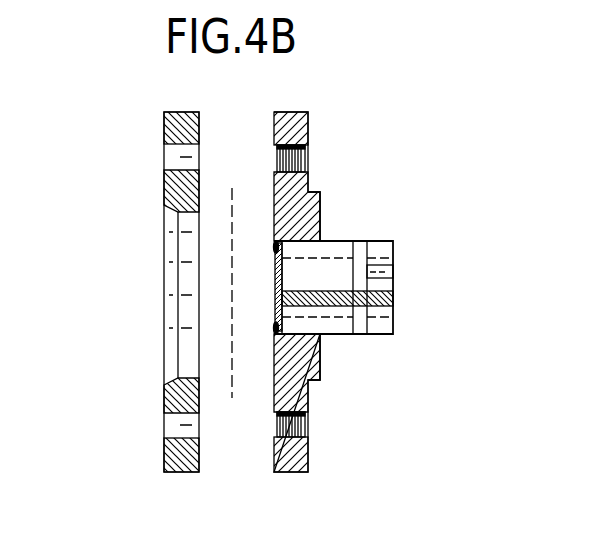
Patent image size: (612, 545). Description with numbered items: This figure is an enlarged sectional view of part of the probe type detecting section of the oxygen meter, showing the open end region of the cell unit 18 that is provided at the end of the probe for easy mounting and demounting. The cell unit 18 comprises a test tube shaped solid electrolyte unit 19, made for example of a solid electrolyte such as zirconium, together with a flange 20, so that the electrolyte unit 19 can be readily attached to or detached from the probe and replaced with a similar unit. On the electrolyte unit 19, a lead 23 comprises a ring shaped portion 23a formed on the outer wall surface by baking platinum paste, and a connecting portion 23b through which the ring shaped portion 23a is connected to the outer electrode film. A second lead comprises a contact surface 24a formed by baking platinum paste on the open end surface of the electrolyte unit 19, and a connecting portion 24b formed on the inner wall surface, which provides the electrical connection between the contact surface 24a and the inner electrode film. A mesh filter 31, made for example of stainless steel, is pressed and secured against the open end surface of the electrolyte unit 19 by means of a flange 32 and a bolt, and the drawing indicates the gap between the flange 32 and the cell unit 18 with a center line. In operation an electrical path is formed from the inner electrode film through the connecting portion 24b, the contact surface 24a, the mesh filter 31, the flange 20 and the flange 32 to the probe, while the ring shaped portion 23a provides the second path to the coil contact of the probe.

The cell unit 18 is at (362, 292).
The solid electrolyte unit 19 is at (333, 336).
The flange 20 is at (307, 402).
The lead 23 is at (382, 225).
The ring shaped portion 23a is at (322, 292).
The connecting portion 23b is at (390, 266).
The contact surface 24a is at (274, 254).
The connecting portion 24b is at (350, 240).
The mesh filter 31 is at (232, 365).
The flange 32 is at (165, 127).